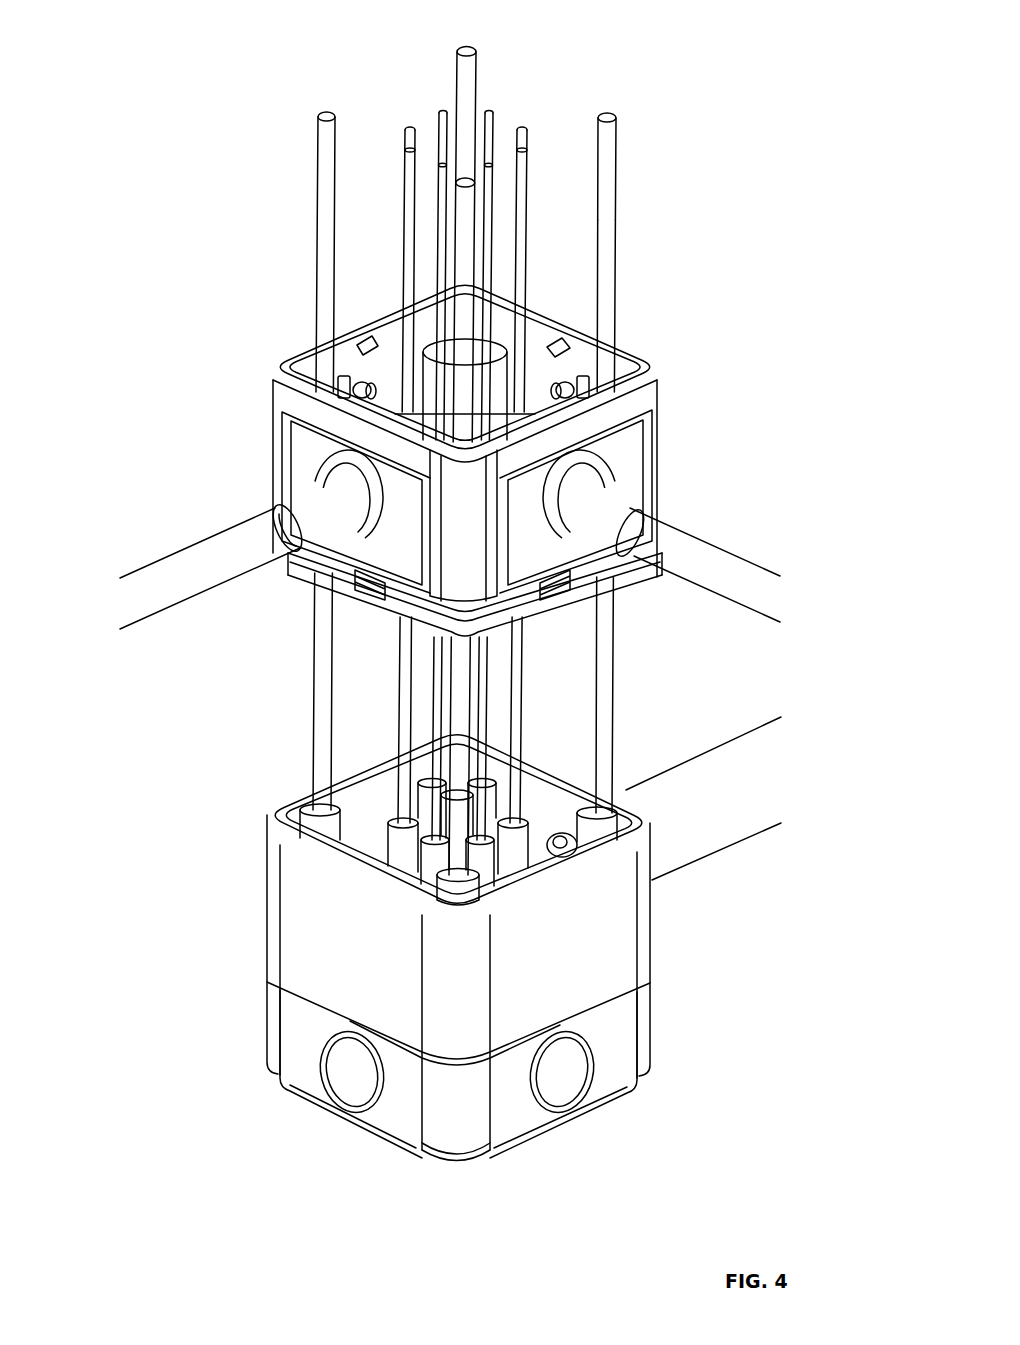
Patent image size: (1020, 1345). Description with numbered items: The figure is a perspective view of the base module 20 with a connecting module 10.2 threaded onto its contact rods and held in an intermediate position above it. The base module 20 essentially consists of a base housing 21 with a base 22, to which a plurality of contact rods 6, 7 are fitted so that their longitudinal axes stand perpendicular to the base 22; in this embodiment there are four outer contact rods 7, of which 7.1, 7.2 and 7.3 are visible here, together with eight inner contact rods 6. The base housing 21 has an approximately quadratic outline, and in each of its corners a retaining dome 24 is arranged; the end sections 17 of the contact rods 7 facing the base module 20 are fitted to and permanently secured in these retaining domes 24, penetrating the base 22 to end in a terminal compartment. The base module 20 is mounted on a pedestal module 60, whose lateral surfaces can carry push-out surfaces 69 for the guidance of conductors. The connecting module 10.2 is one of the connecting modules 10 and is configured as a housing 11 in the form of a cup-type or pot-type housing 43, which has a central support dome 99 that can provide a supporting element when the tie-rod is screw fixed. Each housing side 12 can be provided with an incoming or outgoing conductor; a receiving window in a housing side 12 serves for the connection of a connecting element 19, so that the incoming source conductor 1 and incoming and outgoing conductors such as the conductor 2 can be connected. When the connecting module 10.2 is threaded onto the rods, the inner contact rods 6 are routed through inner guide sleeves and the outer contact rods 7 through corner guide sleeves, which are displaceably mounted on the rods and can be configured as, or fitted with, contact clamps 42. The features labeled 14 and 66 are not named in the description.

The incoming source conductor 1 is at (708, 780).
The incoming/outgoing conductor 2 is at (725, 566).
The inner contact rod 6 is at (427, 127).
The outer contact rod 7 is at (620, 163).
The first outer contact rod 7.1 is at (325, 268).
The second outer contact rod 7.2 is at (467, 73).
The third outer contact rod 7.3 is at (603, 205).
The connecting module 10 is at (664, 385).
The second connecting module 10.2 is at (463, 525).
The housing 11 is at (270, 425).
The housing side 12 is at (307, 403).
The terminal sleeve 14 is at (400, 860).
The end section 17 is at (317, 785).
The connecting element 19 is at (293, 458).
The base module 20 is at (333, 920).
The base housing 21 is at (265, 912).
The base 22 is at (372, 837).
The retaining dome 24 is at (313, 827).
The contact clamp 42 is at (310, 383).
The cup-type housing 43 is at (537, 380).
The pedestal module 60 is at (458, 1075).
The bottom flange 66 is at (607, 577).
The push-out surface 69 is at (352, 1075).
The central support dome 99 is at (427, 350).